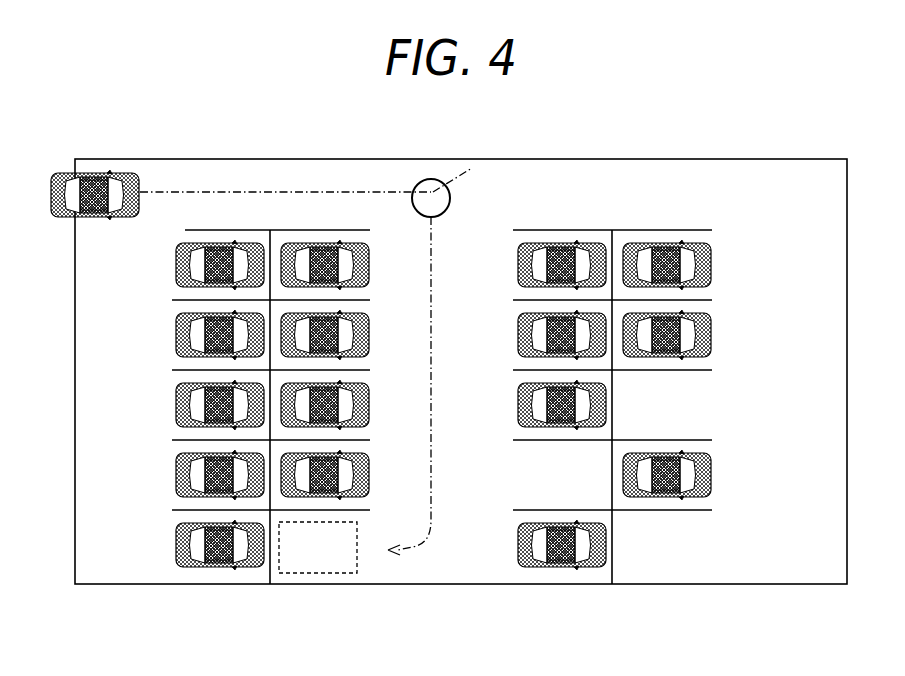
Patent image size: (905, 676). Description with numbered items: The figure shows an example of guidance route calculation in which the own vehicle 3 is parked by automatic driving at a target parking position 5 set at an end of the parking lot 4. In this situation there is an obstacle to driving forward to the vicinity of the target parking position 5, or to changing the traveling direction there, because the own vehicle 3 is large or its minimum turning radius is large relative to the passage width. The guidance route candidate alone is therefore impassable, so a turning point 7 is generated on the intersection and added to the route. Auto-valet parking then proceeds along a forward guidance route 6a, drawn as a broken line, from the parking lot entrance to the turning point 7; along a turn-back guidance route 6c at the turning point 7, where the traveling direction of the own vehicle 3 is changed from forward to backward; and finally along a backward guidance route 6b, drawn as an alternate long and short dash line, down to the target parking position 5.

The own vehicle 3 is at (125, 177).
The parking lot 4 is at (722, 159).
The target parking position 5 is at (315, 567).
The forward guidance route 6a is at (317, 193).
The backward guidance route 6b is at (431, 340).
The turn-back guidance route 6c is at (470, 170).
The turning point 7 is at (448, 207).